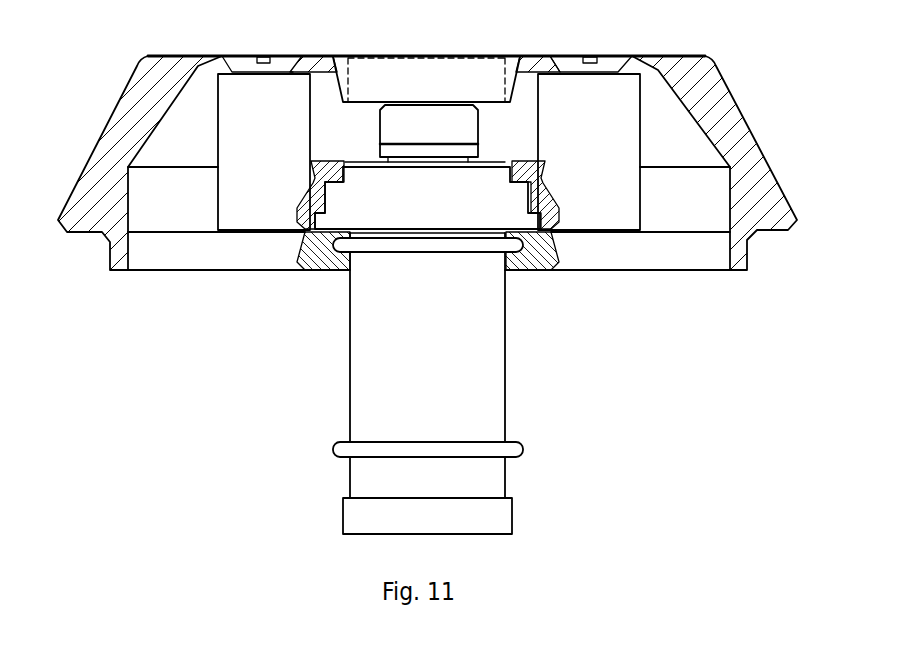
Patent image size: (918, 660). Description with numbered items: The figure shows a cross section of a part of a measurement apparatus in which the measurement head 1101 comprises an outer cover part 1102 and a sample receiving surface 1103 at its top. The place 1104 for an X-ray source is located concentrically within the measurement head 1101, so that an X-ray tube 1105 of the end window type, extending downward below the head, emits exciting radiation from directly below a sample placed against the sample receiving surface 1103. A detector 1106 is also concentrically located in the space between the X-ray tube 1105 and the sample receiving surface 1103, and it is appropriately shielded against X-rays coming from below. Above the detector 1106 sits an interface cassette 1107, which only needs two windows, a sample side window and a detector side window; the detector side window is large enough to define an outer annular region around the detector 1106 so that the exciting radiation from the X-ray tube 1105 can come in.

The measurement head 1101 is at (99, 42).
The outer cover part 1102 is at (718, 88).
The sample receiving surface 1103 is at (523, 56).
The place for an X-ray source 1104 is at (532, 270).
The X-ray tube 1105 is at (493, 418).
The detector 1106 is at (383, 132).
The interface cassette 1107 is at (415, 68).